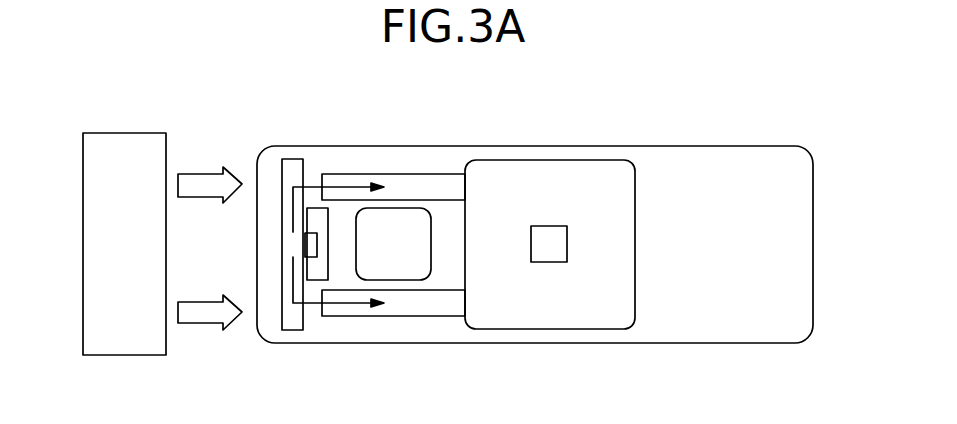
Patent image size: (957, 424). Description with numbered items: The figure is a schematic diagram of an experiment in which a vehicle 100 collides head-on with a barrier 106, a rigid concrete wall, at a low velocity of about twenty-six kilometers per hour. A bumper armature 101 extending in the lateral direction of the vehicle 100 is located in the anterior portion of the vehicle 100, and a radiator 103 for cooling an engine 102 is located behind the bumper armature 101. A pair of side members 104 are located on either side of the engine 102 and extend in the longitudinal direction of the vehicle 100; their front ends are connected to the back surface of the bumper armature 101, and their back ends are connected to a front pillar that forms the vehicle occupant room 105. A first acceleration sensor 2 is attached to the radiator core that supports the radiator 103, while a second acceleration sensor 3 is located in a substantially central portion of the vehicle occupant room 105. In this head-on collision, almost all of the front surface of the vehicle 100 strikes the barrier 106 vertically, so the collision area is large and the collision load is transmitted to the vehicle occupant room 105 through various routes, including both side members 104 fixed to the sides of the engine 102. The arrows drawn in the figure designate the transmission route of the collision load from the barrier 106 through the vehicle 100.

The first acceleration sensor 2 is at (305, 244).
The second acceleration sensor 3 is at (547, 226).
The vehicle 100 is at (370, 146).
The bumper armature 101 is at (293, 165).
The engine 102 is at (417, 249).
The radiator 103 is at (315, 281).
The side member 104 is at (423, 183).
The vehicle occupant room 105 is at (538, 318).
The barrier 106 is at (127, 343).